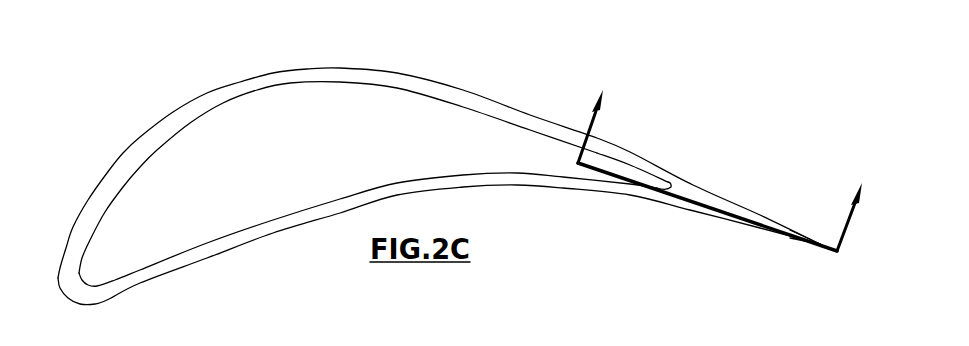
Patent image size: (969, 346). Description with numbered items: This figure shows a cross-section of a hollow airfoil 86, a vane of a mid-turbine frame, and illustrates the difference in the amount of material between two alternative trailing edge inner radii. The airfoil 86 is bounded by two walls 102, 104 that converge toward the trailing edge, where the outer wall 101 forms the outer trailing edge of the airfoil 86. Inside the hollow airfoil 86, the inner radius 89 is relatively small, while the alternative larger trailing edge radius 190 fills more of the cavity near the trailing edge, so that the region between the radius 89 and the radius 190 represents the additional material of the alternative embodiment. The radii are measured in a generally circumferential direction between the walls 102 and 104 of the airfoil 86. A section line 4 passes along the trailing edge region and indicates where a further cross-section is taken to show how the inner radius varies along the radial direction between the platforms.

The wall 104 is at (486, 114).
The wall 102 is at (517, 171).
The airfoil 86 is at (401, 144).
The larger trailing edge radius 190 is at (586, 159).
The inner radius 89 is at (653, 189).
The outer wall 101 is at (815, 246).
The line 4- 4 is at (720, 166).